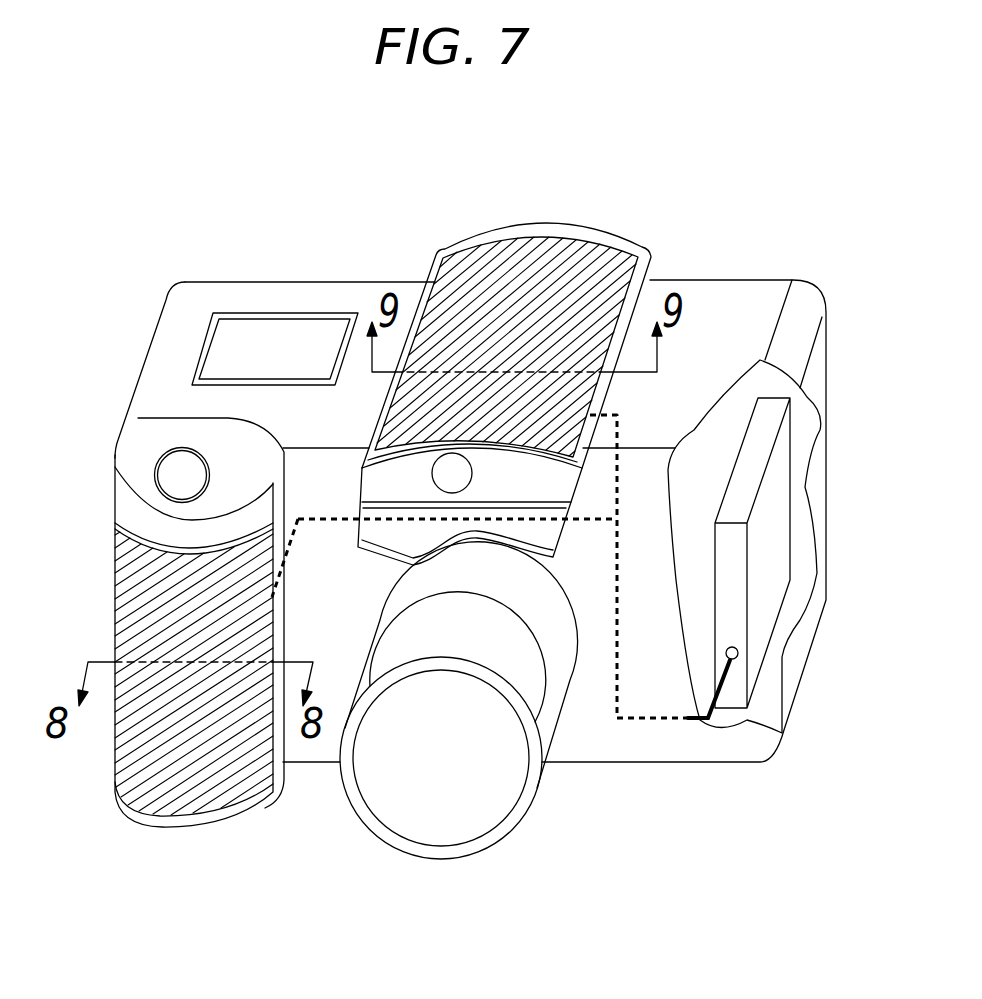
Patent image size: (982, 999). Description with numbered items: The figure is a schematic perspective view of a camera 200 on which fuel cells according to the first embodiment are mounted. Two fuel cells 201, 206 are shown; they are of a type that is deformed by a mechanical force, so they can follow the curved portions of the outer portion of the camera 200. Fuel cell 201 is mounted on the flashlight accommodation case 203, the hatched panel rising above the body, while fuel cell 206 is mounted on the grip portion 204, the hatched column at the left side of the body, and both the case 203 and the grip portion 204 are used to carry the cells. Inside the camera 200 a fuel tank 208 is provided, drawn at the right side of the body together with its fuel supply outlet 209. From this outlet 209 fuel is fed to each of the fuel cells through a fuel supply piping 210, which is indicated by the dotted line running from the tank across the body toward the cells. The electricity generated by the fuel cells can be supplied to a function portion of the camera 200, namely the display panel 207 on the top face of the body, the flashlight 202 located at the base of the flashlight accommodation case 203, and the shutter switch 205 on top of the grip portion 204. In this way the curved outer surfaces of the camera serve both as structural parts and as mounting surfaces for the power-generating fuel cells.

The camera 200 is at (322, 282).
The fuel cell 201 is at (483, 275).
The flashlight 202 is at (447, 480).
The flashlight accommodation case 203 is at (603, 227).
The grip portion 204 is at (130, 510).
The shutter switch 205 is at (175, 469).
The fuel cell 206 is at (180, 805).
The display panel 207 is at (247, 335).
The fuel tank 208 is at (778, 507).
The fuel supply outlet 209 is at (740, 653).
The fuel supply piping 210 is at (665, 722).